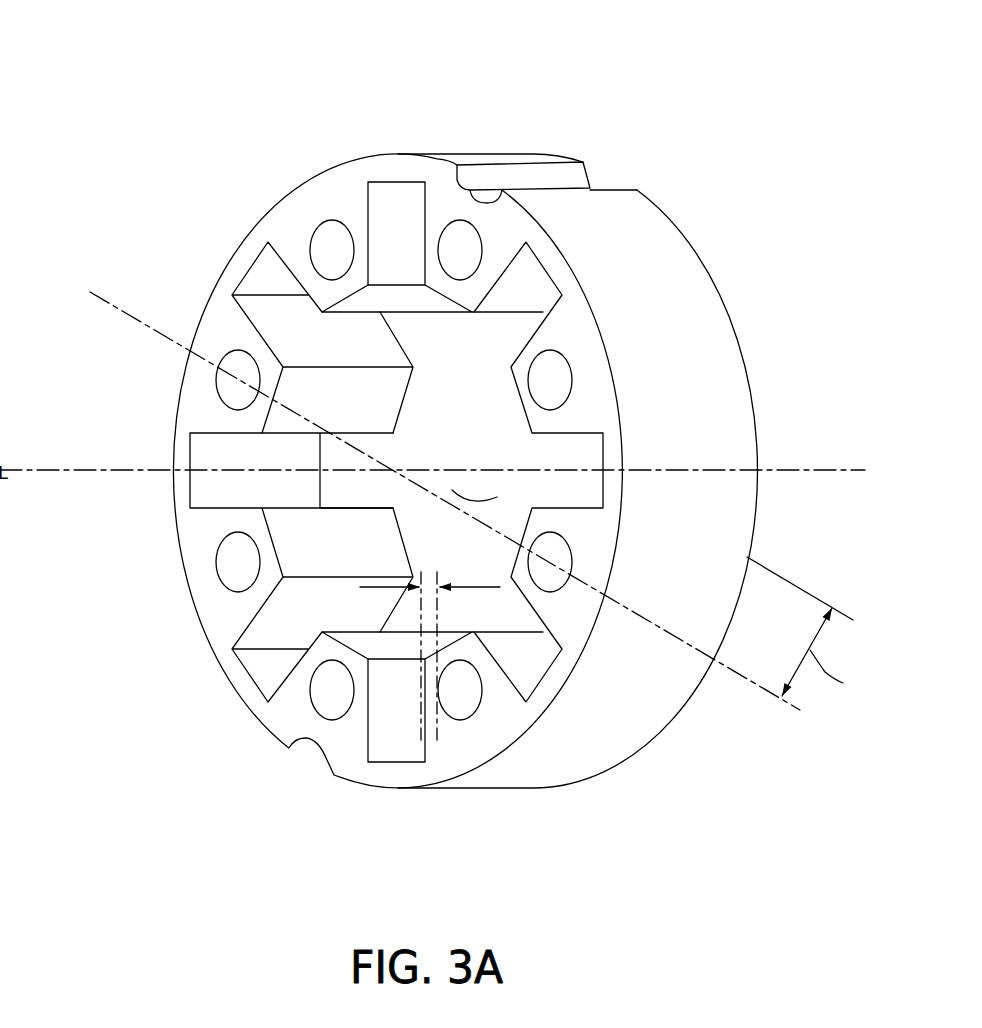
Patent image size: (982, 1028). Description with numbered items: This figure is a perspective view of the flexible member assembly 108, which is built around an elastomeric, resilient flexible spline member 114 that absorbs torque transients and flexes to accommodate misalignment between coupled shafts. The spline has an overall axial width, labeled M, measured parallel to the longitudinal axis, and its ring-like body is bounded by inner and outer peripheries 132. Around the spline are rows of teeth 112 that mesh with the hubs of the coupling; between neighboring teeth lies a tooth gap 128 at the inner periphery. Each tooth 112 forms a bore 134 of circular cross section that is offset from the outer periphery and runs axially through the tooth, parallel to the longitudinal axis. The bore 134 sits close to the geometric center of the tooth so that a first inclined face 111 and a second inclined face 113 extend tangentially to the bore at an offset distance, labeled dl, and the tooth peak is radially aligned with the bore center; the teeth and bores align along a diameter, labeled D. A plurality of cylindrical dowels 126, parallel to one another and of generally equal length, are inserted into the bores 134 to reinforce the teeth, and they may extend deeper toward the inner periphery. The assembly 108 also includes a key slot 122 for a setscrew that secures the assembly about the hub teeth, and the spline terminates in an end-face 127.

The flexible member assembly 108 is at (185, 138).
The first inclined face 111 is at (277, 617).
The teeth 112 is at (380, 537).
The second inclined face 113 is at (362, 503).
The flexible spline member 114 is at (712, 330).
The key slot 122 is at (612, 185).
The dowels 126 is at (455, 693).
The end-face 127 is at (213, 610).
The tooth gap 128 is at (205, 440).
The inner and outer peripheries 132 is at (352, 172).
The bore 134 is at (218, 565).